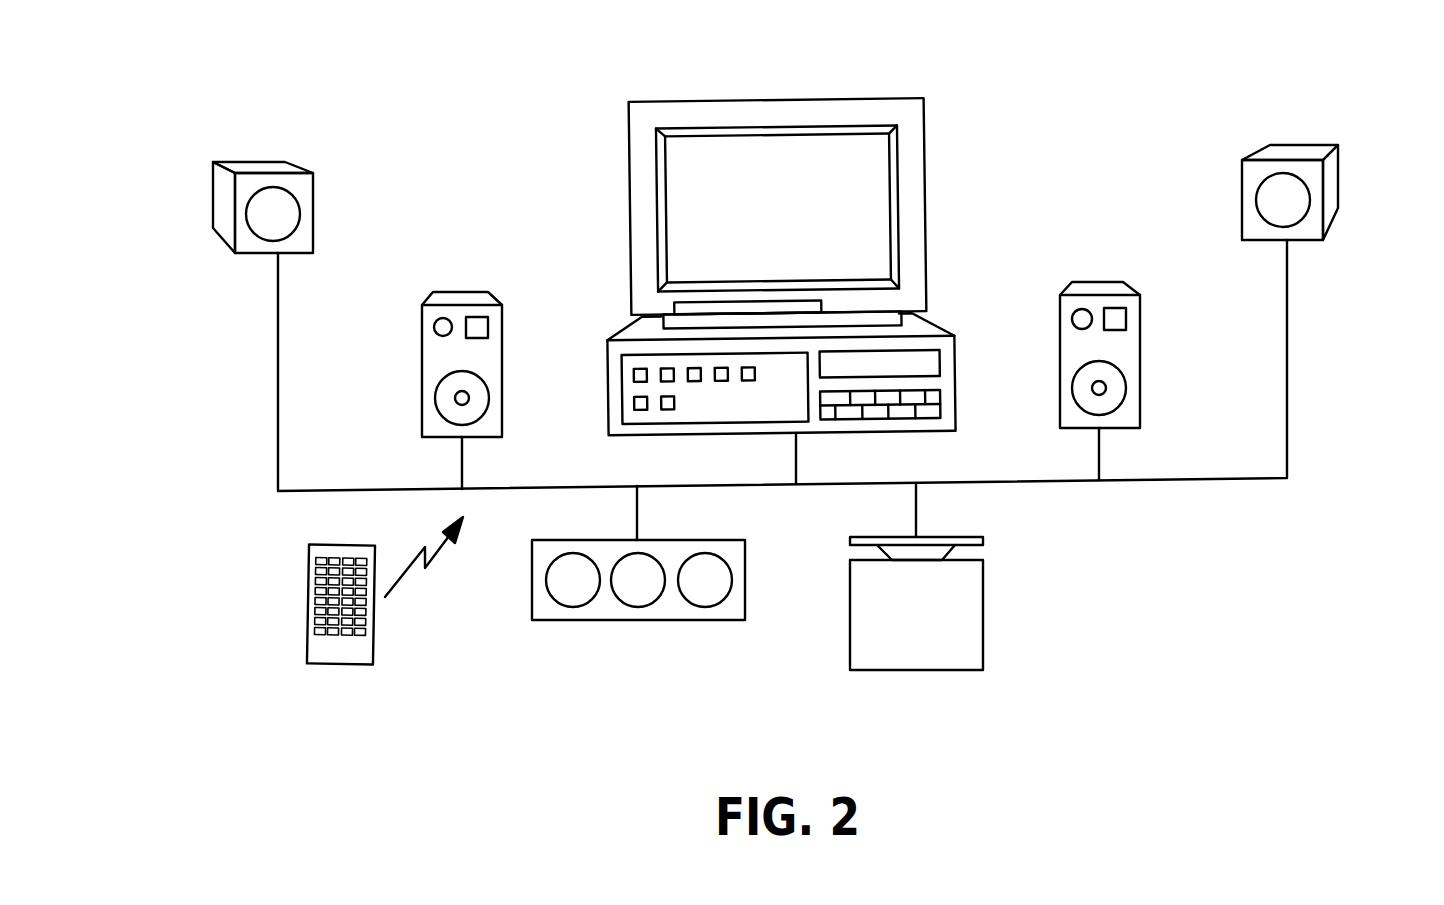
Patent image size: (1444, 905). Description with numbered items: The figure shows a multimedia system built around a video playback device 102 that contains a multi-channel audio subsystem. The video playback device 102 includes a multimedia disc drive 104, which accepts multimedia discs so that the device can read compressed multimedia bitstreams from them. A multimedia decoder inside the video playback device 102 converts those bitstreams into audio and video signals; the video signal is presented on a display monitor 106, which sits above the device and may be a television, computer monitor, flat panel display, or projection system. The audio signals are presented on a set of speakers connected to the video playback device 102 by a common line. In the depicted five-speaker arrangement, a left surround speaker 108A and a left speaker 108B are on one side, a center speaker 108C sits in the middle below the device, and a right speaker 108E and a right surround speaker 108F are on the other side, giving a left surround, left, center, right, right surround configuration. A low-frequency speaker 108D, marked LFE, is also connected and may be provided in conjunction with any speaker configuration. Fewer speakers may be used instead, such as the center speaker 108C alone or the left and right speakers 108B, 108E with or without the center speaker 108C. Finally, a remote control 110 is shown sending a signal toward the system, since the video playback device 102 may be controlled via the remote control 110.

The video playback device 102 is at (823, 385).
The multimedia disc drive 104 is at (940, 368).
The display monitor 106 is at (777, 100).
The left surround speaker 108A is at (248, 255).
The left speaker 108B is at (460, 290).
The center speaker 108C is at (588, 620).
The low-frequency speaker 108D is at (958, 653).
The right speaker 108E is at (1098, 280).
The right surround speaker 108F is at (1307, 240).
The remote control 110 is at (340, 663).